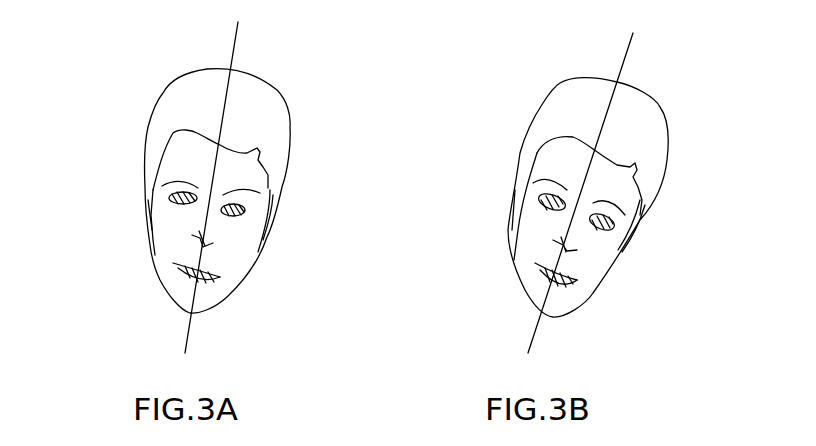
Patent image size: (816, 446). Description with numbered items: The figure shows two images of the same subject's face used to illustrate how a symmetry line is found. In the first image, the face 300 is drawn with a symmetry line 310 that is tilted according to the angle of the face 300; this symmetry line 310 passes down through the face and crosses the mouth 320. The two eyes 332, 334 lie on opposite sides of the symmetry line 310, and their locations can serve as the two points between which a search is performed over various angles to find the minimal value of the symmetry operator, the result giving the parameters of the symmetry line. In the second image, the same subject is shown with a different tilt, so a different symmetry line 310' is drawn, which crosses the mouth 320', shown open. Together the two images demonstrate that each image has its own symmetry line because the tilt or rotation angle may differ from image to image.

In FIG. 3A, the face 300 is at (138, 52).
In FIG. 3A, the symmetry line 310 is at (250, 186).
In FIG. 3A, the mouth 320 is at (140, 260).
In FIG. 3A, the eye 332 is at (143, 195).
In FIG. 3A, the eye 334 is at (283, 192).
In FIG. 3B, the symmetry line 310' is at (621, 193).
In FIG. 3B, the mouth 320' is at (503, 264).